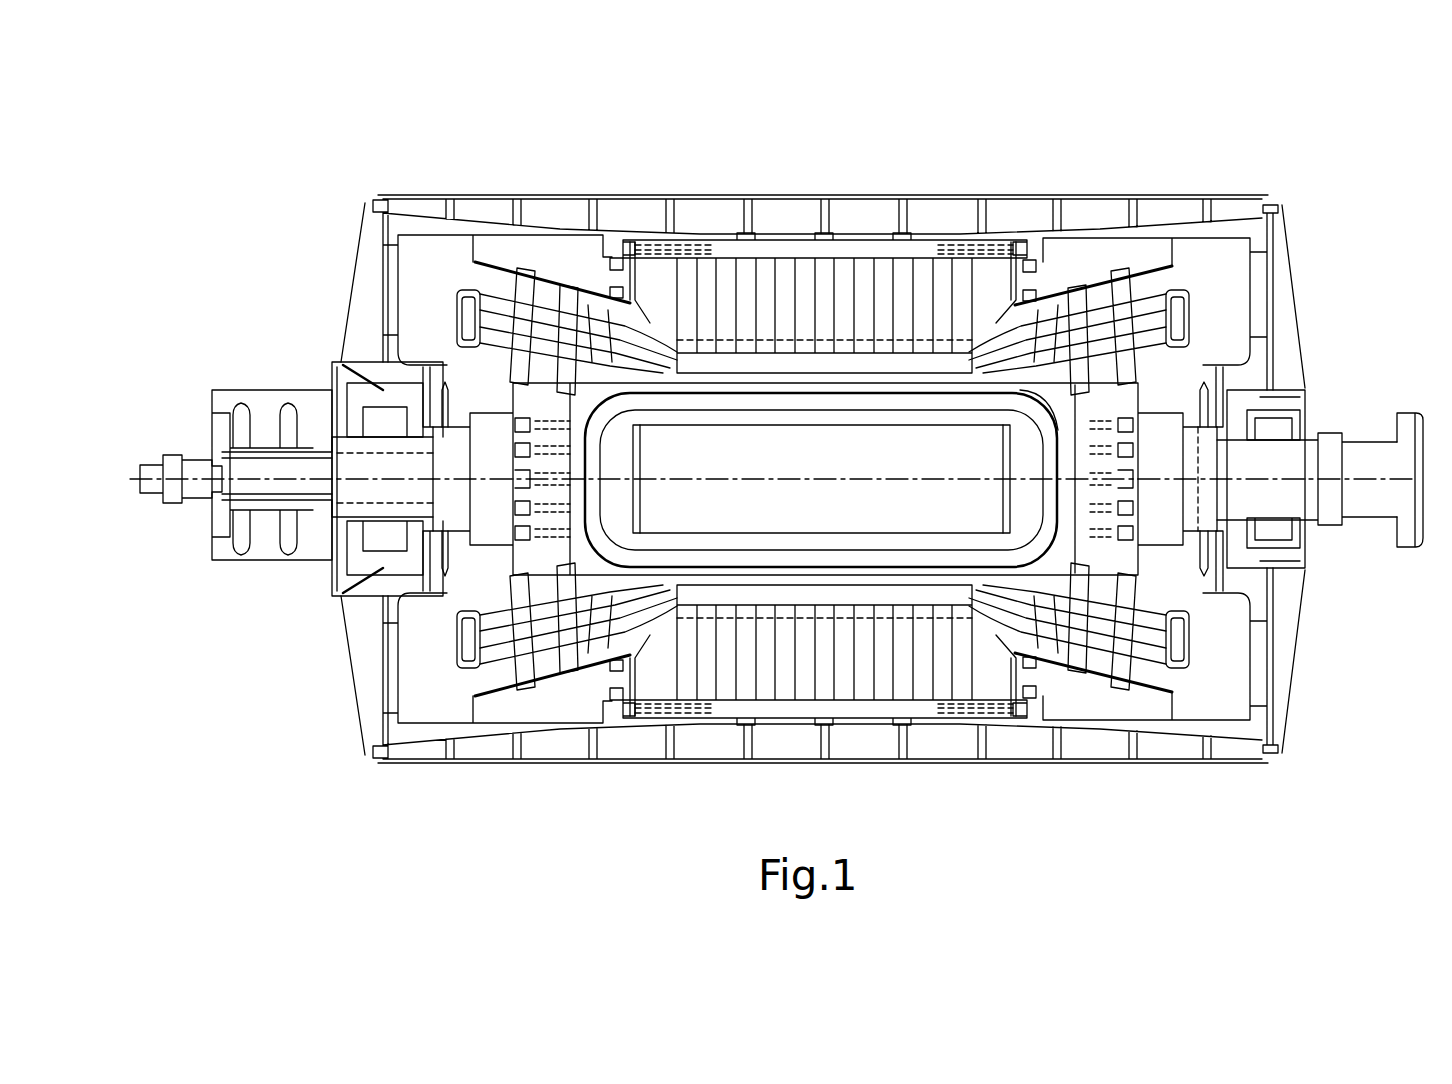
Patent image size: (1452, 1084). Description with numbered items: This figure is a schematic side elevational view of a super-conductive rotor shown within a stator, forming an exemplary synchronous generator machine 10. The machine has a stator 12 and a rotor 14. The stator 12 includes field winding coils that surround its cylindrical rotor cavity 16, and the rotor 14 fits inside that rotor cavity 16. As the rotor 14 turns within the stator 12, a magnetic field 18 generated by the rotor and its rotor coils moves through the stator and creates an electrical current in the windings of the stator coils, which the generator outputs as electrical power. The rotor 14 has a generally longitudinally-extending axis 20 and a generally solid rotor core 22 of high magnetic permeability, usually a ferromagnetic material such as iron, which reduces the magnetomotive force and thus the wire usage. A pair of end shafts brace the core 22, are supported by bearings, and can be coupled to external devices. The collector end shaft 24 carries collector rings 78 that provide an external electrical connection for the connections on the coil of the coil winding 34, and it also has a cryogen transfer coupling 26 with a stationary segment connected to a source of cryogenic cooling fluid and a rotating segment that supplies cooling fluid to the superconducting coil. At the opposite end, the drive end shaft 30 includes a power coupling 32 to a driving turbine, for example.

The synchronous generator machine 10 is at (558, 116).
The stator 12 is at (724, 278).
The rotor 14 is at (533, 566).
The rotor cavity 16 is at (493, 369).
The magnetic field 18 is at (925, 332).
The longitudinally-extending axis 20 is at (345, 474).
The rotor core 22 is at (781, 508).
The collector end shaft 24 is at (405, 458).
The cryogen transfer coupling 26 is at (192, 456).
The drive end shaft 30 is at (1305, 390).
The power coupling 32 is at (1415, 557).
The coil winding 34 is at (1050, 407).
The collector rings 78 is at (278, 552).